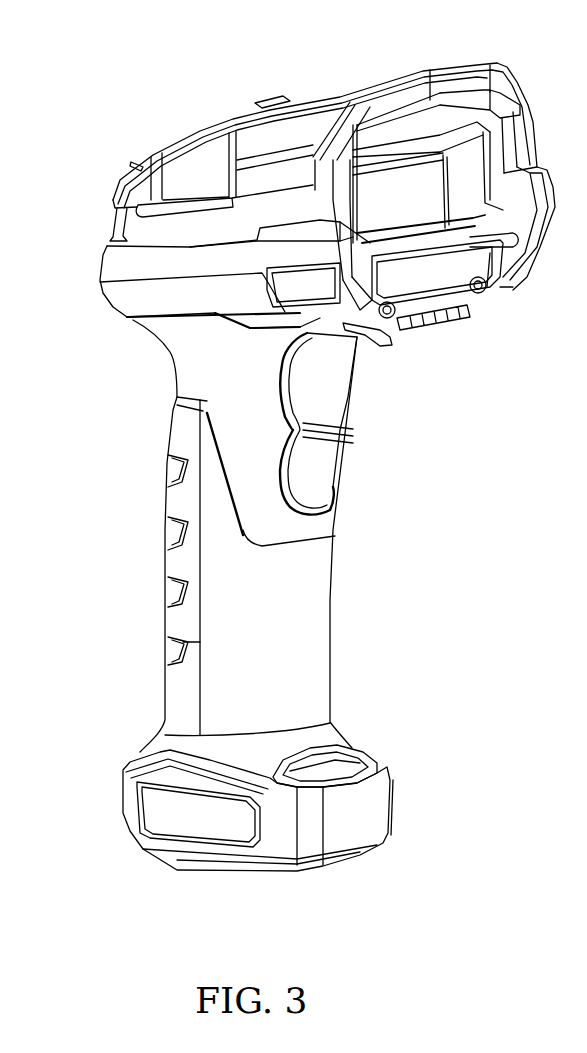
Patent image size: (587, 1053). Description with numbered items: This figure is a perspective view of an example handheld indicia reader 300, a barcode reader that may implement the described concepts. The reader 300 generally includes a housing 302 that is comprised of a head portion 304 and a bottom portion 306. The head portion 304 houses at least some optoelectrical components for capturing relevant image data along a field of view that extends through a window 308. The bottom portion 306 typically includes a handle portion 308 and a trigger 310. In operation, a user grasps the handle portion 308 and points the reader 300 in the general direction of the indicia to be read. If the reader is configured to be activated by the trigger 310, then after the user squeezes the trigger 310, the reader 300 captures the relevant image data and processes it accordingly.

The indicia reader 300 is at (104, 112).
The housing 302 is at (125, 300).
The head portion 304 is at (90, 276).
The bottom portion 306 is at (126, 633).
The window 308 is at (427, 212).
The trigger 310 is at (325, 376).